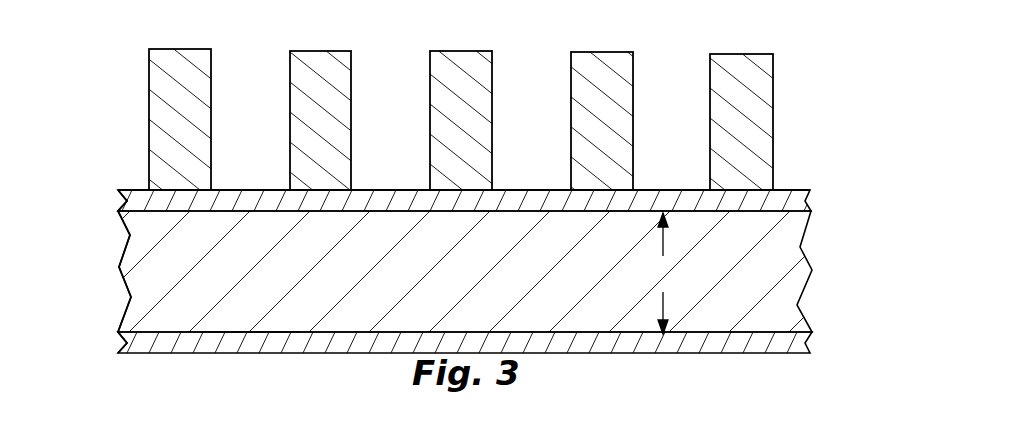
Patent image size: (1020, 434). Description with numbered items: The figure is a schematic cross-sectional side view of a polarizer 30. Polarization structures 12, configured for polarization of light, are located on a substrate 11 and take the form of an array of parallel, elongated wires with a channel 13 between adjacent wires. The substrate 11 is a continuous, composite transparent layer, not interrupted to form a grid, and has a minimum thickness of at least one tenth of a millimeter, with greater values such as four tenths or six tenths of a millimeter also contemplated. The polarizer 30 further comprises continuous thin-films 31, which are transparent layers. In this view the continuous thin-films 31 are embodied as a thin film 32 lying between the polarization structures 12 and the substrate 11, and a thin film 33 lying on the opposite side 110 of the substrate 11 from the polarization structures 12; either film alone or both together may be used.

The substrate 11 is at (475, 293).
The opposite side of the substrate 110 is at (232, 326).
The polarization structures 12 is at (193, 135).
The channel 13 is at (460, 125).
The polarizer 30 is at (856, 100).
The continuous thin-film 31 is at (126, 203).
The thin film 32 is at (810, 203).
The thin film 33 is at (800, 344).